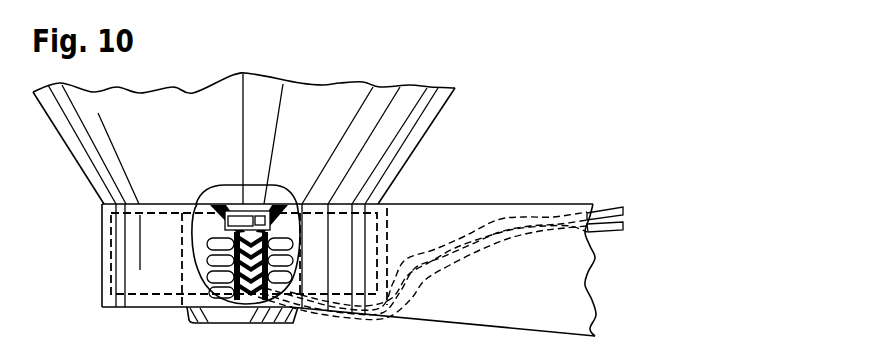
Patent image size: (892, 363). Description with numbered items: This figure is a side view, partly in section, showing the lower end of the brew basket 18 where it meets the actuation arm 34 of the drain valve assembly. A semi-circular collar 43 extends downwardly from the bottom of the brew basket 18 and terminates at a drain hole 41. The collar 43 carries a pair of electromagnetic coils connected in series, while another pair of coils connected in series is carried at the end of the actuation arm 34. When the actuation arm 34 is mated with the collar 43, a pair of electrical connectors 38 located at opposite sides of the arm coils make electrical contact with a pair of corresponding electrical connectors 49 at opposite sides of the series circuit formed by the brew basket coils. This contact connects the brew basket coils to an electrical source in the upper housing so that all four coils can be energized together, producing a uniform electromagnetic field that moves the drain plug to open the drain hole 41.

The brew basket 18 is at (375, 95).
The actuation arm 34 is at (447, 212).
The electrical connectors 38 is at (262, 205).
The drain hole 41 is at (220, 323).
The semi-circular collar 43 is at (102, 248).
The electrical connectors 49 is at (238, 207).